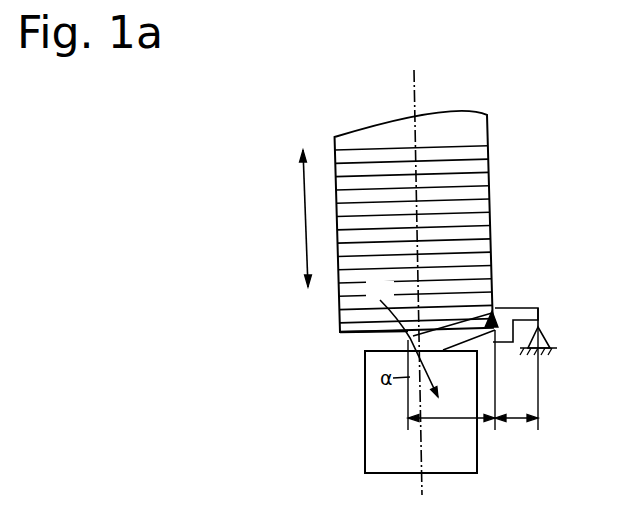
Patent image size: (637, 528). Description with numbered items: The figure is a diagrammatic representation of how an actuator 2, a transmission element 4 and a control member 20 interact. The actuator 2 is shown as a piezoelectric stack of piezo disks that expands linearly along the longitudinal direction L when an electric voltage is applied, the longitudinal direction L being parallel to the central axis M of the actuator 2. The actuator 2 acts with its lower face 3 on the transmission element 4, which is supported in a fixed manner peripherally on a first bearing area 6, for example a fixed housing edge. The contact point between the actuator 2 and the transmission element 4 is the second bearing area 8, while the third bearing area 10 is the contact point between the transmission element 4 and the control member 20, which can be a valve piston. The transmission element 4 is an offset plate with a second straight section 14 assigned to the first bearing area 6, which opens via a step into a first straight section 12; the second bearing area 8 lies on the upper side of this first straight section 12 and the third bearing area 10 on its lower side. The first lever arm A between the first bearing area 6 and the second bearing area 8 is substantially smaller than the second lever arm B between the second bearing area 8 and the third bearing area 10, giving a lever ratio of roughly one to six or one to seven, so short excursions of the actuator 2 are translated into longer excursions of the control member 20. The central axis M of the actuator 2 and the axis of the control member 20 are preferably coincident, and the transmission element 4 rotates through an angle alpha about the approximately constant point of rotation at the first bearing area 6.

The actuator 2 is at (482, 178).
The lower face 3 is at (352, 333).
The transmission element 4 is at (520, 307).
The first bearing area 6 is at (545, 330).
The second bearing area 8 is at (495, 307).
The third bearing area 10 is at (402, 337).
The first straight section 12 is at (477, 343).
The second straight section 14 is at (538, 312).
The control member 20 is at (380, 451).
The central axis M is at (415, 75).
The longitudinal direction L is at (290, 218).
The first lever arm A is at (518, 422).
The second lever arm B is at (458, 420).